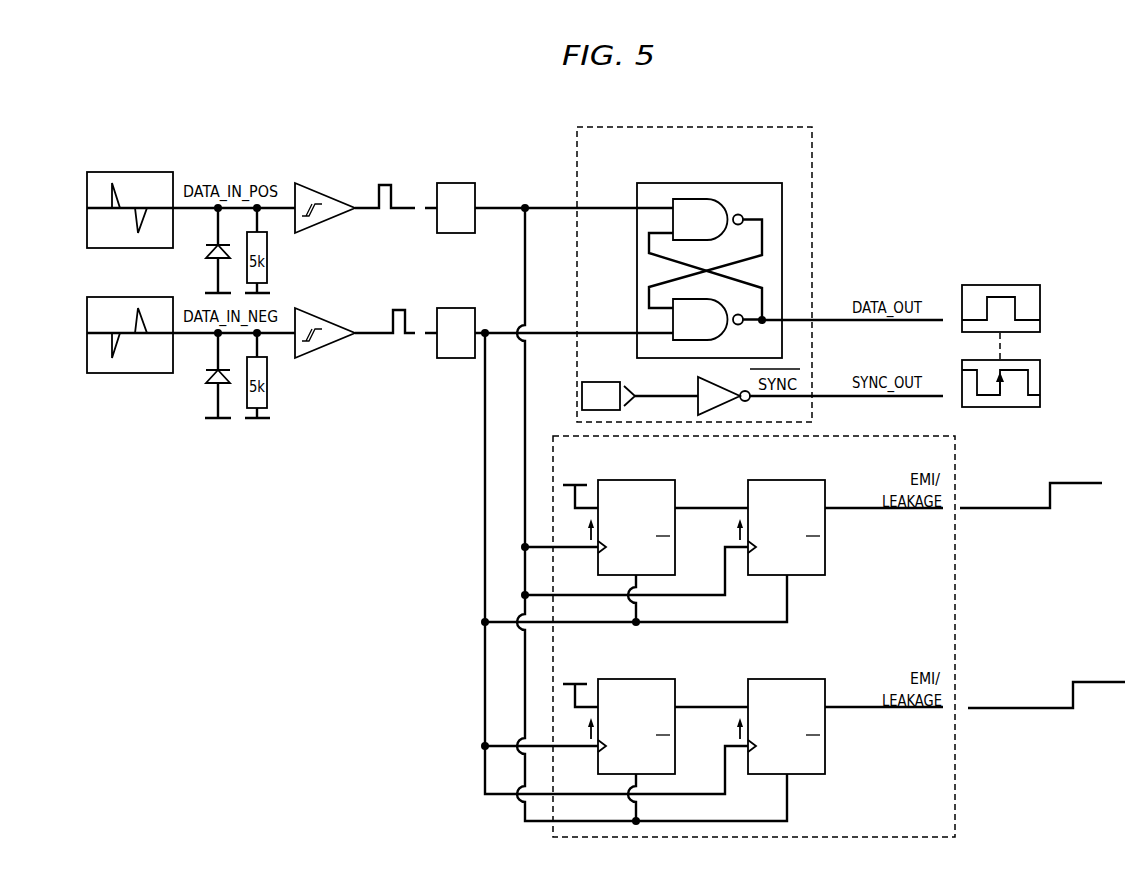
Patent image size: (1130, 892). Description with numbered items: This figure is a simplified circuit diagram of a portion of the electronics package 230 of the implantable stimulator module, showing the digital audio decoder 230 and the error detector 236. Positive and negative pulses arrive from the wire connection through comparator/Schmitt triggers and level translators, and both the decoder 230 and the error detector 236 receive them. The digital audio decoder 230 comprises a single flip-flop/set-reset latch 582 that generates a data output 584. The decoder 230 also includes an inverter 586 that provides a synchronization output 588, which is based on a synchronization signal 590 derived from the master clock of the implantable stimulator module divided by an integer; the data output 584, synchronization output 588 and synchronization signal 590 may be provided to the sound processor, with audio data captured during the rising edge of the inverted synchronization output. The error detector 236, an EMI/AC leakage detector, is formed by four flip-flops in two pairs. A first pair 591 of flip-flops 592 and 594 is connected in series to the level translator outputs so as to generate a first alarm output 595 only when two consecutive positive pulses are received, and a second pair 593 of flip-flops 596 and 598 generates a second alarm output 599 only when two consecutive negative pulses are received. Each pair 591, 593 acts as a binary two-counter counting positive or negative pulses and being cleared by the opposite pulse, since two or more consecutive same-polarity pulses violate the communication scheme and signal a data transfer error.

The digital audio decoder 230 is at (813, 171).
The error detector 236 is at (956, 806).
The flip-flop/set-reset latch 582 is at (783, 223).
The data output 584 is at (1007, 284).
The inverter 586 is at (697, 387).
The synchronization output 588 is at (1042, 381).
The synchronization signal 590 is at (597, 382).
The first pair of flip-flops 591 is at (852, 541).
The flip-flop 592 is at (676, 503).
The second pair of flip-flops 593 is at (852, 740).
The flip-flop 594 is at (826, 503).
The output AL1 595 is at (1075, 481).
The flip-flop 596 is at (676, 702).
The flip-flop 598 is at (826, 702).
The output AL2 599 is at (1097, 682).